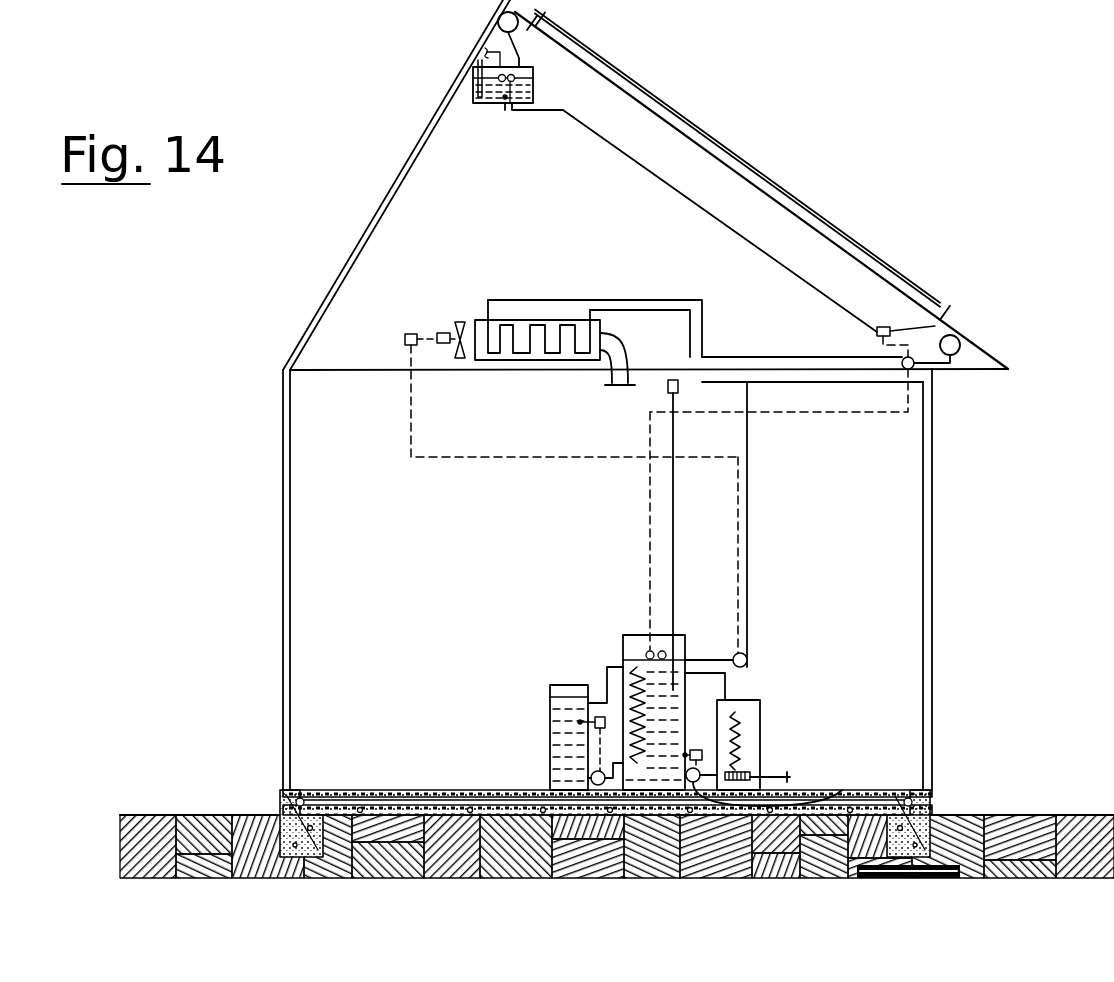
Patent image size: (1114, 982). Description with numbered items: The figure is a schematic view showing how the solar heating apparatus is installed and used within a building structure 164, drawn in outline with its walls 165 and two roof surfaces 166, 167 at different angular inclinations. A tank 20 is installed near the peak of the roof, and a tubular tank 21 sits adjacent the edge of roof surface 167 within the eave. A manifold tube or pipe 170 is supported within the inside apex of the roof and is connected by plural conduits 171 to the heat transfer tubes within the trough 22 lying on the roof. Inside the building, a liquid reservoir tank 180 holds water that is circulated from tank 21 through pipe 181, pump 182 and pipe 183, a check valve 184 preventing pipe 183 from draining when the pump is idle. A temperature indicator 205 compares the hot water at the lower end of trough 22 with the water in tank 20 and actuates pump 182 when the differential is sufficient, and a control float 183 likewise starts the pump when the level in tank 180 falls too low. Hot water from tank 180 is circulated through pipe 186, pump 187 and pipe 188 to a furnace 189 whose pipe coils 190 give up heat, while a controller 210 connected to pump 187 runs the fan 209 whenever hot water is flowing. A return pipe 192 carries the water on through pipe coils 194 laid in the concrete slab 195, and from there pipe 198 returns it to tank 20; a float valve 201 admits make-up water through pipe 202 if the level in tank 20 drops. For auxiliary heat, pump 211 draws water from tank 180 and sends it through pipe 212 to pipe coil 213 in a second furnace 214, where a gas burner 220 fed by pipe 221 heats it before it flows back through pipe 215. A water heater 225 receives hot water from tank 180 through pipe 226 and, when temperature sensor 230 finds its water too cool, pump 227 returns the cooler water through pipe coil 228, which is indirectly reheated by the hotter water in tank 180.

The tank 20 is at (533, 100).
The tubular tank 21 is at (960, 350).
The trough 22 is at (742, 177).
The building structure 164 is at (270, 498).
The walls 165 is at (283, 595).
The roof surface 166 is at (388, 194).
The roof surface 167 is at (738, 160).
The manifold tube or pipe 170 is at (518, 14).
The conduits 171 is at (540, 24).
The liquid reservoir tank 180 is at (623, 648).
The pipe 181 is at (945, 368).
The pump 182 is at (905, 388).
The pipe / control float 183 is at (766, 357).
The check valve 184 is at (668, 390).
The pipe 186 is at (722, 665).
The pump 187 is at (748, 666).
The pipe 188 is at (750, 521).
The furnace 189 is at (522, 320).
The pipe coils 190 is at (560, 330).
The return pipe 192 is at (676, 300).
The pipe coils 194 is at (334, 790).
The concrete slab 195 is at (375, 790).
The pipe 198 is at (290, 653).
The float valve 201 is at (510, 112).
The pipe 202 is at (487, 50).
The temperature indicator 205 is at (886, 326).
The fan 209 is at (459, 322).
The controller 210 is at (411, 334).
The pump 211 is at (860, 788).
The pipe 212 is at (710, 768).
The pipe coil 213 is at (740, 735).
The furnace 214 is at (748, 700).
The pipe 215 is at (735, 692).
The gas burner 220 is at (768, 772).
The pipe 221 is at (790, 780).
The water heater 225 is at (550, 708).
The pipe 226 is at (607, 675).
The pump 227 is at (591, 777).
The pipe coil 228 is at (630, 745).
The temperature sensor 230 is at (578, 722).